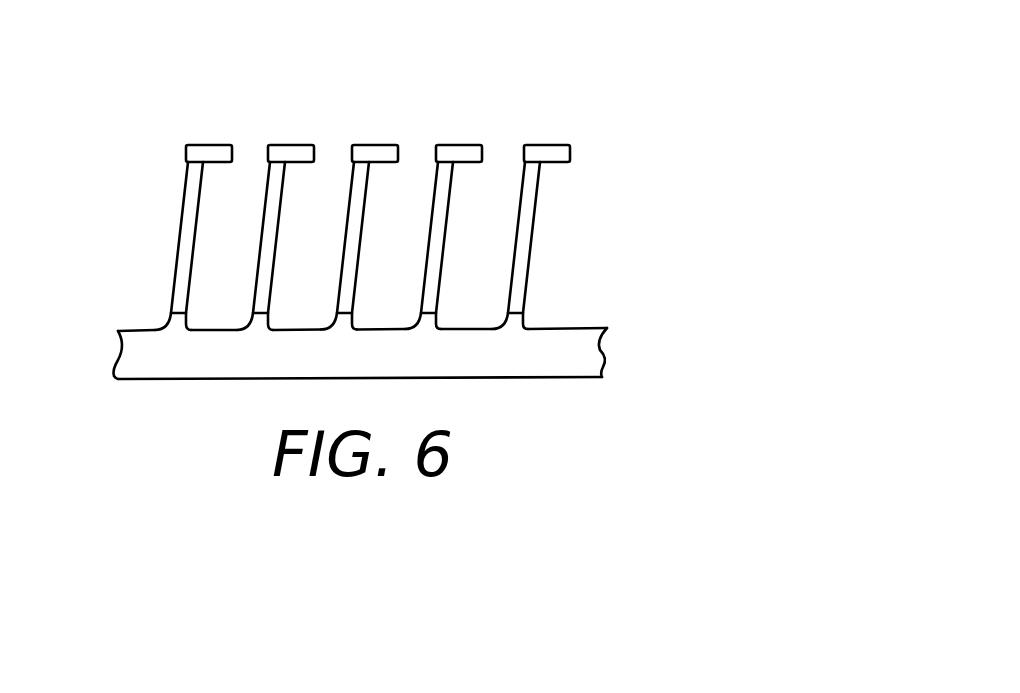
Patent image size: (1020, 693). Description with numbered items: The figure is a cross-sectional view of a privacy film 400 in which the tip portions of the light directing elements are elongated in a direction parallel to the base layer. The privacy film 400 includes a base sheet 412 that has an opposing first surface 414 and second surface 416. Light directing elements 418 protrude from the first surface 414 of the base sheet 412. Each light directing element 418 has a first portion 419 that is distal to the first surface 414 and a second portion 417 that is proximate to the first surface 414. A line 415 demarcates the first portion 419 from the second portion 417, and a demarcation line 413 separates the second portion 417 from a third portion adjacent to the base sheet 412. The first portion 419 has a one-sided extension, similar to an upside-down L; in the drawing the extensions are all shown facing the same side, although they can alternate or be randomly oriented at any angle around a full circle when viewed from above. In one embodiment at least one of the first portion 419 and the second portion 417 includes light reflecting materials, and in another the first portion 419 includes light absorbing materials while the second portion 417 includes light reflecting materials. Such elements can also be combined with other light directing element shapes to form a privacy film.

The privacy film 400 is at (455, 62).
The base sheet 412 is at (580, 353).
The demarcation line 413 is at (430, 303).
The first surface 414 is at (568, 325).
The line 415 is at (267, 159).
The second surface 416 is at (530, 377).
The second portion 417 is at (527, 189).
The light directing elements 418 is at (200, 145).
The first portion 419 is at (542, 144).